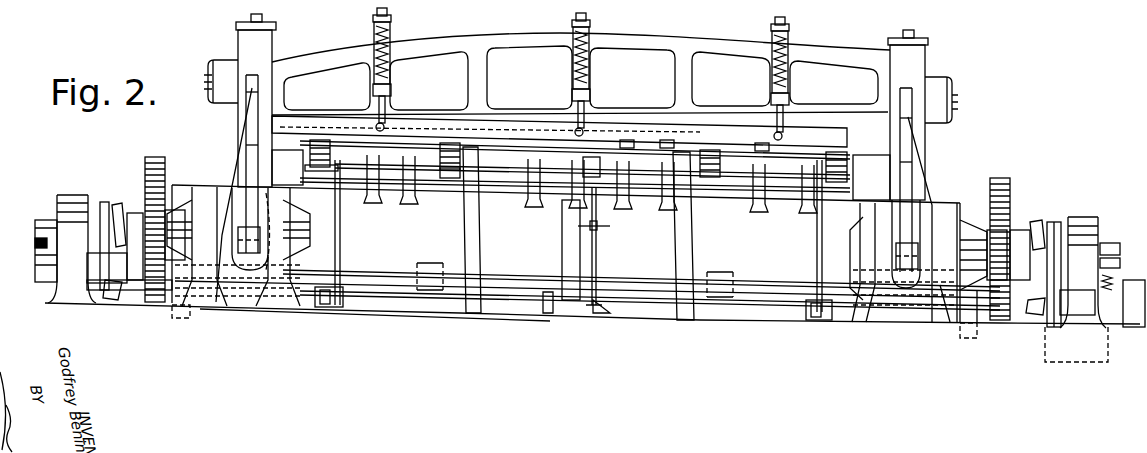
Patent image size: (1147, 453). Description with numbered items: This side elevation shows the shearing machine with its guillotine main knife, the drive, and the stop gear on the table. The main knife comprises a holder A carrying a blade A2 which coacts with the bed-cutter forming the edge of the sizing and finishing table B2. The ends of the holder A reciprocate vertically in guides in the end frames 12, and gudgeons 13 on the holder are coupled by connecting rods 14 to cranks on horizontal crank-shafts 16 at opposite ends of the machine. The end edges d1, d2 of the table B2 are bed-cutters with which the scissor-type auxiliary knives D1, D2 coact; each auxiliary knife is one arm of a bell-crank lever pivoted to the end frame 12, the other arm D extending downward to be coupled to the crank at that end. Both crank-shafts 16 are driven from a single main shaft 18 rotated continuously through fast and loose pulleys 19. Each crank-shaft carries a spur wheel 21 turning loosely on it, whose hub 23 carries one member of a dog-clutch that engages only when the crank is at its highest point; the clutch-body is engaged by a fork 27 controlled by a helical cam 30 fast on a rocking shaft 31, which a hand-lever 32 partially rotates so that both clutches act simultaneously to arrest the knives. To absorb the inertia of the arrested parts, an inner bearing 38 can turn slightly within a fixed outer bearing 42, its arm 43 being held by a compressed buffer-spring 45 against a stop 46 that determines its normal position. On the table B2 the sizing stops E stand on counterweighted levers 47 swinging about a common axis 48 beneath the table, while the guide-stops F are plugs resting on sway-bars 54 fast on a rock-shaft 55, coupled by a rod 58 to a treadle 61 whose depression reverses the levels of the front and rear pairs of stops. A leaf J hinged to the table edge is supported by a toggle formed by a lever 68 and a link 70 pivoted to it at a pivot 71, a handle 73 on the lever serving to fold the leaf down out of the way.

The holder A is at (507, 42).
The blade A2 is at (860, 118).
The sizing and finishing table B2 is at (283, 178).
The arm of bell-crank lever D is at (248, 176).
The auxiliary knife D1 is at (912, 117).
The auxiliary knife D2 is at (253, 92).
The end edge d1 is at (913, 163).
The end edge d2 is at (250, 146).
The sizing stops E is at (668, 143).
The guide-stops F is at (320, 140).
The leaf J is at (593, 150).
The end frames 12 is at (266, 46).
The gudgeons 13 is at (208, 82).
The connecting rods 14 is at (228, 129).
The crank-shafts 16 is at (100, 210).
The main shaft 18 is at (507, 281).
The fast and loose pulleys 19 is at (1083, 362).
The spur wheel 21 is at (148, 157).
The hub 23 is at (145, 213).
The fork 27 is at (119, 205).
The helical cam 30 is at (117, 303).
The rocking shaft 31 is at (385, 270).
The hand-lever 32 is at (92, 270).
The inner bearing 38 is at (55, 205).
The outer bearing 42 is at (72, 195).
The arm 43 is at (1112, 265).
The buffer-spring 45 is at (1113, 284).
The stop 46 is at (1112, 252).
The counterweighted levers 47 is at (531, 205).
The common axis 48 is at (643, 197).
The sway-bar 54 is at (448, 178).
The rock-shaft 55 is at (391, 169).
The rod 58 is at (341, 228).
The treadle 61 is at (332, 288).
The lever 68 is at (597, 262).
The link 70 is at (597, 190).
The pivot 71 is at (590, 214).
The handle 73 is at (600, 230).